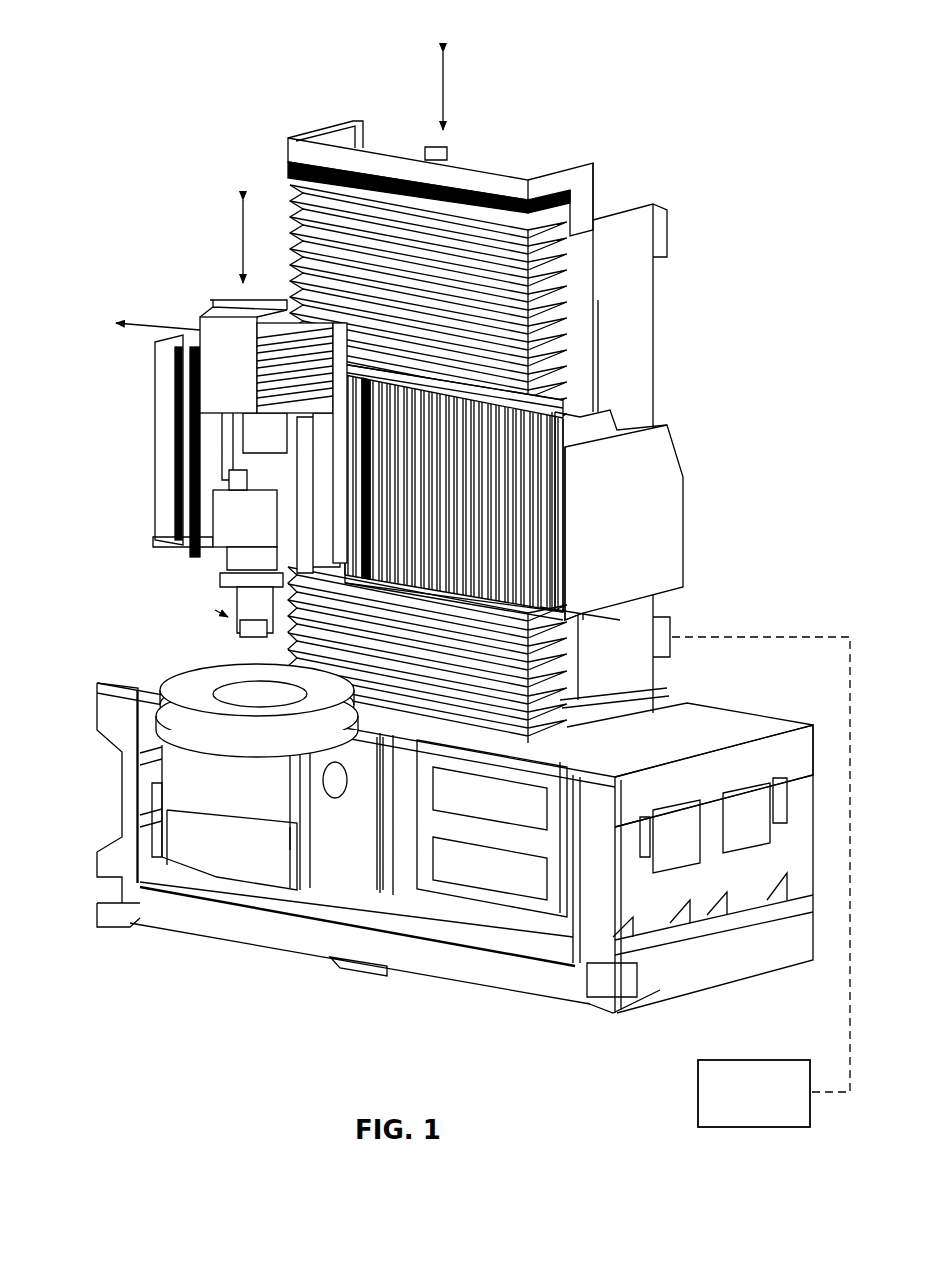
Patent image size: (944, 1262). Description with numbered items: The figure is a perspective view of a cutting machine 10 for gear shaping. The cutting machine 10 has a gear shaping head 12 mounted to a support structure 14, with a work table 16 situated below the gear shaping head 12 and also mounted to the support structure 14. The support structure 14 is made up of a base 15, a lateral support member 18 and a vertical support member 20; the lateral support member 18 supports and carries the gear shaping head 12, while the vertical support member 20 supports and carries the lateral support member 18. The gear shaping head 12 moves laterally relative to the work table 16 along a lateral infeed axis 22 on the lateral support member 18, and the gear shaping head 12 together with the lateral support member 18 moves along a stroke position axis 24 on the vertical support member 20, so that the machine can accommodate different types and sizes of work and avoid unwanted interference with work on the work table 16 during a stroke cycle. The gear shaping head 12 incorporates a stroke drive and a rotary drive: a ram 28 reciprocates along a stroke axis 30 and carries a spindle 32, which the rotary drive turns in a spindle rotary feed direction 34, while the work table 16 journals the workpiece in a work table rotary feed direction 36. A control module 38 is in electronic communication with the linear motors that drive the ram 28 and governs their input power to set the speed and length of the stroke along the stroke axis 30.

The cutting machine 10 is at (732, 288).
The gear shaping head 12 is at (143, 435).
The support structure 14 is at (732, 688).
The base 15 is at (800, 748).
The work table 16 is at (226, 856).
The lateral support member 18 is at (658, 470).
The vertical support member 20 is at (592, 185).
The lateral infeed axis 22 is at (198, 335).
The stroke position axis 24 is at (445, 78).
The ram 28 is at (210, 482).
The stroke axis 30 is at (241, 229).
The spindle 32 is at (248, 598).
The spindle rotary feed direction 34 is at (238, 632).
The work table rotary feed direction 36 is at (247, 772).
The control module 38 is at (698, 1118).